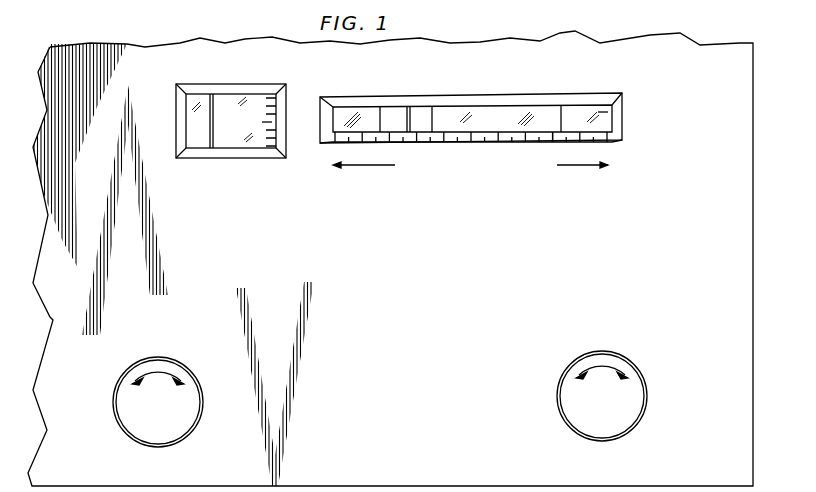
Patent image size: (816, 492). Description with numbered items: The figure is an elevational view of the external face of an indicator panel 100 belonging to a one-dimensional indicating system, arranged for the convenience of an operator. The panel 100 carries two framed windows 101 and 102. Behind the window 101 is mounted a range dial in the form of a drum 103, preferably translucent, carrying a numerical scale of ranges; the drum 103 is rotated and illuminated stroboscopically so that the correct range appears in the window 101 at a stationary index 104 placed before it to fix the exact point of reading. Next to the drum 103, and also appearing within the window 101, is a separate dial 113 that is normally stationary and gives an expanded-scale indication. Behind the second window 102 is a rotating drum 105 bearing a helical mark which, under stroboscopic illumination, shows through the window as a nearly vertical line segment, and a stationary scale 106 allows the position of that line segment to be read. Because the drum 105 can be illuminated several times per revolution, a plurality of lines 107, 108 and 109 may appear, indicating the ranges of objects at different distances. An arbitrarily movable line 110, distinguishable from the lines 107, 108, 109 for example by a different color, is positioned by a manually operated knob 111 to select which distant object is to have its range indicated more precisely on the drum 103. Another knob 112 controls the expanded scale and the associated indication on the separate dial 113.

The indicator panel 100 is at (634, 50).
The window 101 is at (258, 93).
The window 102 is at (513, 112).
The drum 103 is at (231, 140).
The stationary index 104 is at (266, 122).
The rotating drum 105 is at (608, 113).
The stationary scale 106 is at (557, 140).
The line 107 is at (380, 116).
The line 108 is at (433, 118).
The line 109 is at (562, 113).
The arbitrarily movable line 110 is at (407, 116).
The knob 111 is at (636, 386).
The knob 112 is at (126, 396).
The separate dial 113 is at (197, 143).